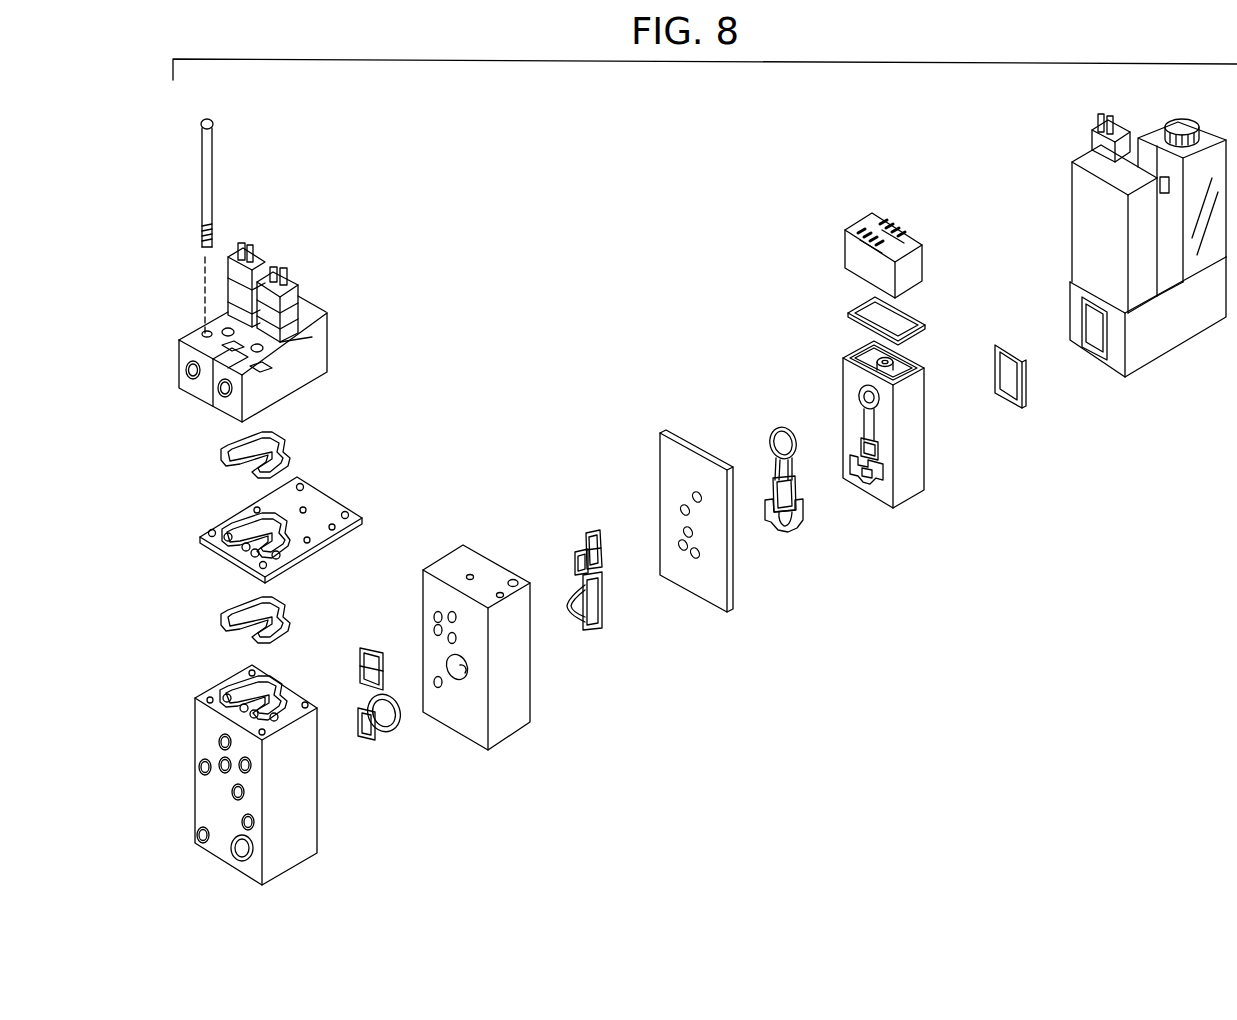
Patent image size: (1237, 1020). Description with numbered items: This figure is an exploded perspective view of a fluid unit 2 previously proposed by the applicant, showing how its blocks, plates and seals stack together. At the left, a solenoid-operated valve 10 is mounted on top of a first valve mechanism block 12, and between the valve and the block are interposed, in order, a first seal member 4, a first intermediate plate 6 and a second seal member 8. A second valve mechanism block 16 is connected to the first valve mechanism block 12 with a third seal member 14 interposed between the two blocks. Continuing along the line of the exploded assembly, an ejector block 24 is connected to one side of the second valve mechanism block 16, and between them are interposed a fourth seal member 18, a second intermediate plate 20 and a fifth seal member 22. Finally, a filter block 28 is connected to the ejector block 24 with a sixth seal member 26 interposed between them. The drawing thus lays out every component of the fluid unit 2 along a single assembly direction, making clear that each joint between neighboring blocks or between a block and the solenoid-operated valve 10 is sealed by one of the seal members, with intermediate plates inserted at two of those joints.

The fluid unit 2 is at (578, 266).
The first seal member 4 is at (276, 454).
The first intermediate plate 6 is at (318, 510).
The second seal member 8 is at (276, 620).
The solenoid-operated valve 10 is at (334, 346).
The first valve mechanism block 12 is at (297, 823).
The third seal member 14 is at (386, 738).
The second valve mechanism block 16 is at (508, 706).
The fourth seal member 18 is at (580, 632).
The second intermediate plate 20 is at (708, 603).
The fifth seal member 22 is at (788, 540).
The ejector block 24 is at (906, 478).
The sixth seal member 26 is at (1006, 405).
The filter block 28 is at (1165, 338).